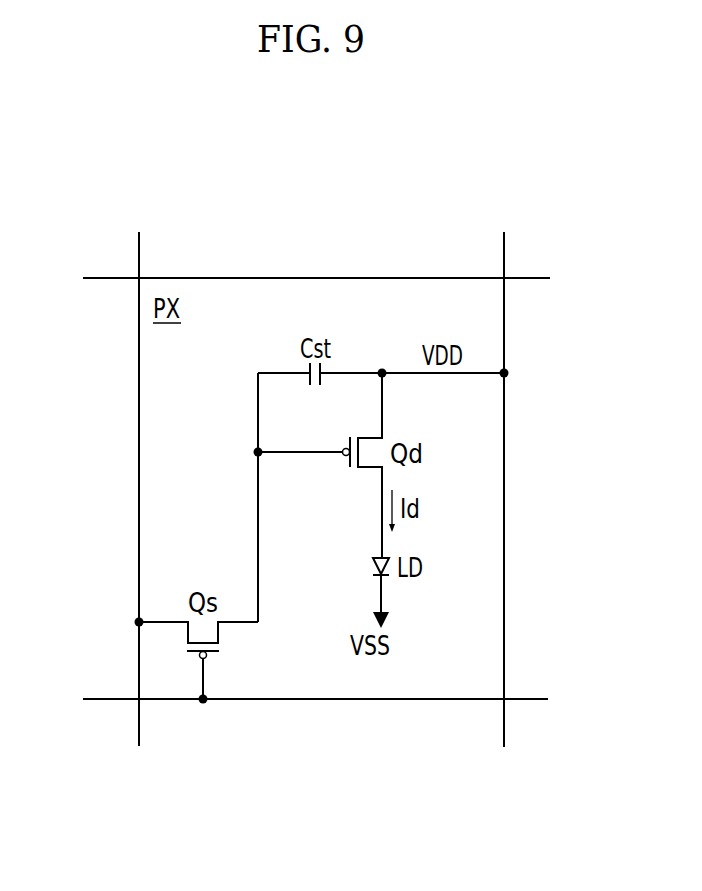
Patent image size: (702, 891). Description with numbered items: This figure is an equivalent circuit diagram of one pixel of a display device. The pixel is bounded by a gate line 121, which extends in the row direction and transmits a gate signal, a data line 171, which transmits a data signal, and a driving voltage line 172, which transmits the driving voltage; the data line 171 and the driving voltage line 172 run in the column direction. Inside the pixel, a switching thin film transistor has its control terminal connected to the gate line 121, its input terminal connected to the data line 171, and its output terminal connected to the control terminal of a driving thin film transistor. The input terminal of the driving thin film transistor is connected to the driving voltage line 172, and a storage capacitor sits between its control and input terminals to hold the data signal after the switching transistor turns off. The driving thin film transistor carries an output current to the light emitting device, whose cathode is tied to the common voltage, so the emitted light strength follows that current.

The data line 171 is at (139, 472).
The driving voltage line 172 is at (504, 472).
The gate line 121 is at (294, 699).